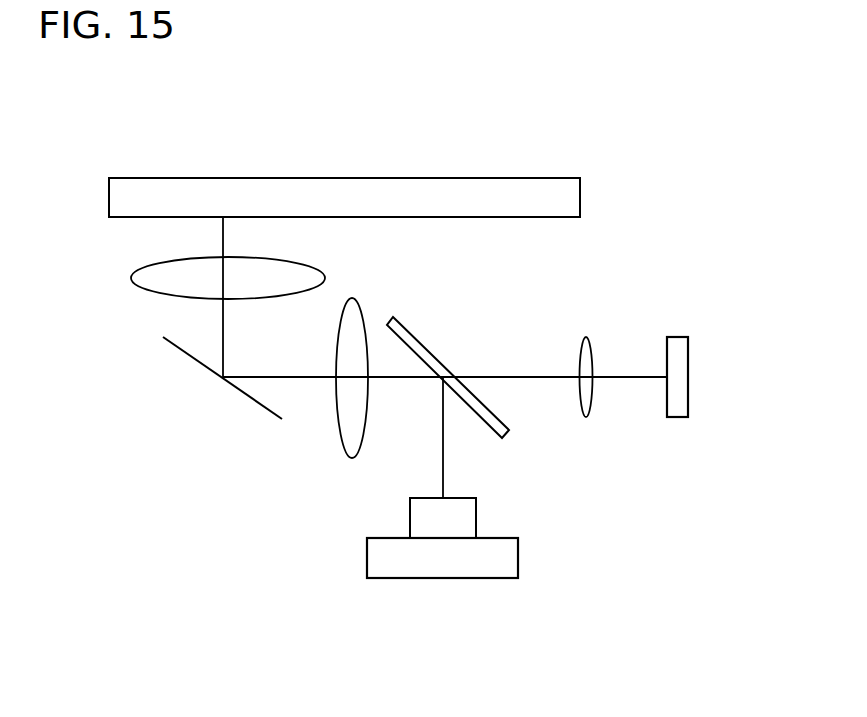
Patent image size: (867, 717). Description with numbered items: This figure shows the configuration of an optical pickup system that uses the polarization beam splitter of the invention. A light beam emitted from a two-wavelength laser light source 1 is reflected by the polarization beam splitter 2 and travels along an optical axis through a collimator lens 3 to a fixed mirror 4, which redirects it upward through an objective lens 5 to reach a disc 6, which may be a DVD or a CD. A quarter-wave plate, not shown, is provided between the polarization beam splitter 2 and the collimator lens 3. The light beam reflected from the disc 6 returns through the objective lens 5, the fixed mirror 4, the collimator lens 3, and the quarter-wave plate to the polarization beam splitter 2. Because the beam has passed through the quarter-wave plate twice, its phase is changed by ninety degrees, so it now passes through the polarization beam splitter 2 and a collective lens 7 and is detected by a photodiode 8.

The two-wavelength laser light source 1 is at (502, 559).
The polarization beam splitter 2 is at (430, 347).
The collimator lens 3 is at (338, 428).
The fixed mirror 4 is at (205, 367).
The objective lens 5 is at (165, 289).
The disc 6 is at (553, 195).
The collective lens 7 is at (588, 338).
The photodiode 8 is at (687, 337).